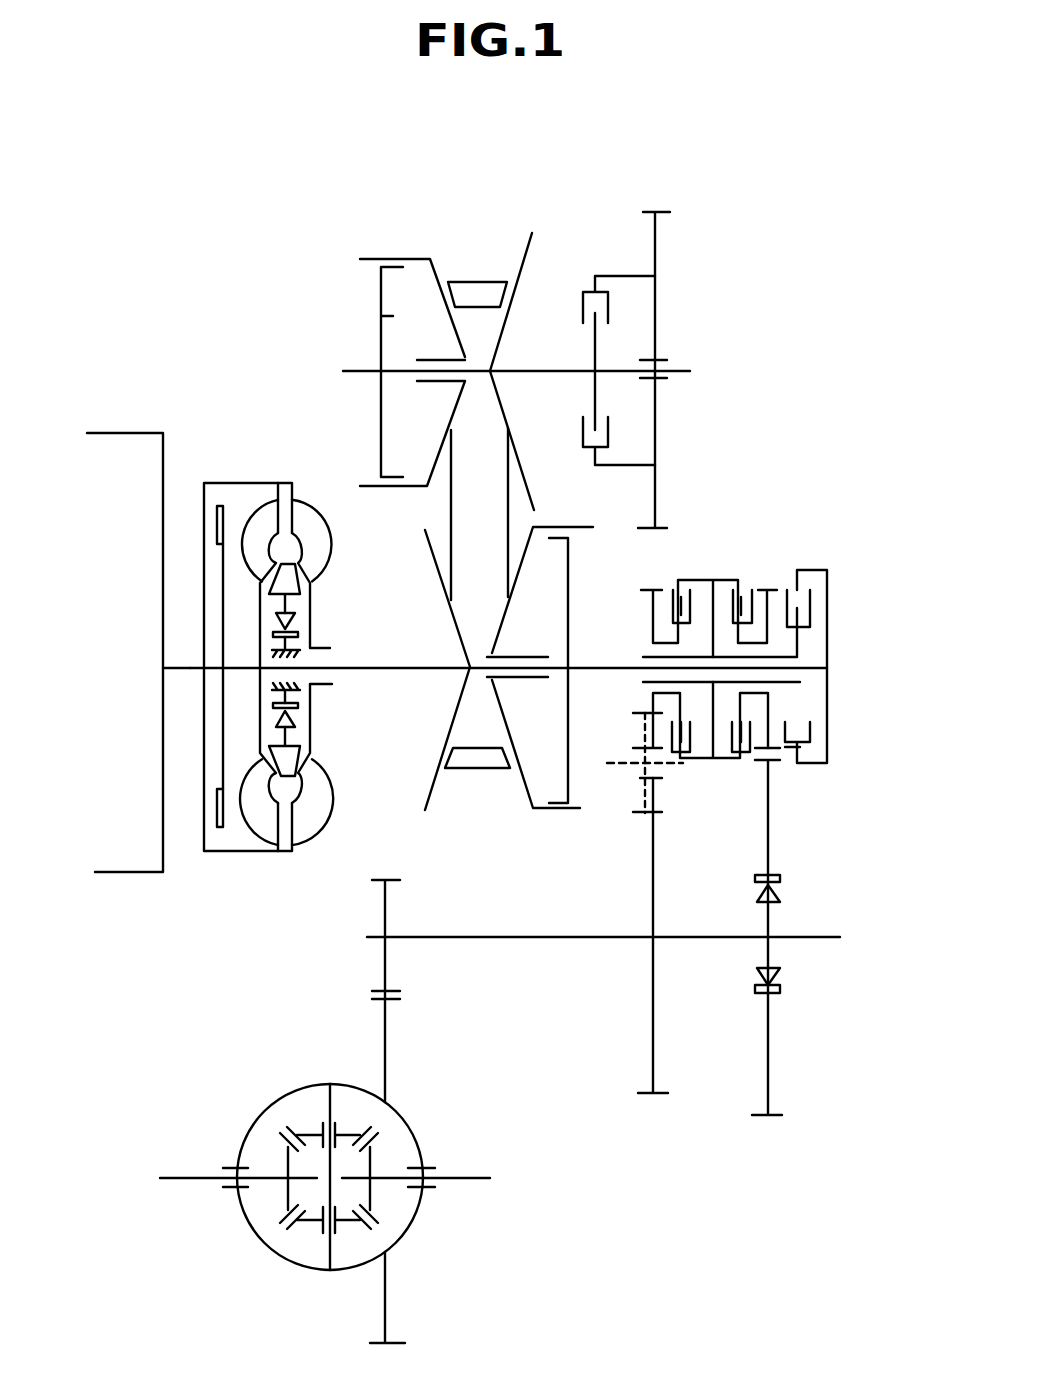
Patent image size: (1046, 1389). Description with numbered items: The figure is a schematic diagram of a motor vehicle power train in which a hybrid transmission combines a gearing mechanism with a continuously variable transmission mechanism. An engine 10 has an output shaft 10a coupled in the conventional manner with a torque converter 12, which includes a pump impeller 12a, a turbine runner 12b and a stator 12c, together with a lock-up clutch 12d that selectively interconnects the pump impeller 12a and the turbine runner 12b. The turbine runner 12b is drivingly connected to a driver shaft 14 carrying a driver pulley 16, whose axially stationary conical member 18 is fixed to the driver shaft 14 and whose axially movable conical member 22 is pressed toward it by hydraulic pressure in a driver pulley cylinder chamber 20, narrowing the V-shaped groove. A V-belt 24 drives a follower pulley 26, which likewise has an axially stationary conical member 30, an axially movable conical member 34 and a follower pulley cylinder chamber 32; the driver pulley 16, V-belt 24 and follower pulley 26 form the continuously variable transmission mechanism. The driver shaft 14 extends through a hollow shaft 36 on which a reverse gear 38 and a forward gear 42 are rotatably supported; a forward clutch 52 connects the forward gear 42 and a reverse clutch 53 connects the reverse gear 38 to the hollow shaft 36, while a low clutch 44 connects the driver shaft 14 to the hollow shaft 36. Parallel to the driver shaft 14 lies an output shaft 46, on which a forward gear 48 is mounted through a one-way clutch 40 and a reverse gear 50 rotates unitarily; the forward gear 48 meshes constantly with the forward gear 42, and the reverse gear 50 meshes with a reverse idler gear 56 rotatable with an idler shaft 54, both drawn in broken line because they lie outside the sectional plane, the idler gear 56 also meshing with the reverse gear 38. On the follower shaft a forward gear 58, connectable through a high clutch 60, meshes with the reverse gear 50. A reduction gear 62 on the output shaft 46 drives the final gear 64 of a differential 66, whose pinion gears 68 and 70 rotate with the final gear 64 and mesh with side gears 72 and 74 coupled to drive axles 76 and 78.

The engine 10 is at (136, 455).
The output shaft 10a is at (181, 670).
The torque converter 12 is at (294, 470).
The pump impeller 12a is at (312, 533).
The turbine runner 12b is at (264, 527).
The stator 12c is at (292, 583).
The lock-up clutch 12d is at (214, 523).
The driver shaft 14 is at (420, 666).
The driver pulley 16 is at (477, 782).
The axially stationary conical member 18 is at (435, 780).
The driver pulley cylinder chamber 20 is at (560, 740).
The axially movable conical member 22 is at (523, 790).
The V-belt 24 is at (510, 522).
The follower pulley 26 is at (497, 256).
The axially stationary conical member 30 is at (520, 256).
The follower pulley cylinder chamber 32 is at (385, 316).
The axially movable conical member 34 is at (440, 258).
The hollow shaft 36 is at (643, 656).
The reverse gear 38 is at (650, 590).
The one-way clutch 40 is at (778, 975).
The forward gear 42 is at (773, 590).
The low clutch 44 is at (826, 577).
The output shaft 46 is at (553, 935).
The forward gear 48 is at (769, 1120).
The reverse gear 50 is at (653, 1098).
The forward clutch 52 is at (752, 580).
The reverse clutch 53 is at (670, 584).
The idler shaft 54 is at (687, 765).
The reverse idler gear 56 is at (636, 812).
The forward gear 58 is at (668, 210).
The high clutch 60 is at (588, 288).
The reduction gear 62 is at (385, 878).
The final gear 64 is at (392, 1003).
The differential 66 is at (318, 1080).
The pinion gear 68 is at (350, 1130).
The pinion gear 70 is at (350, 1227).
The side gear 72 is at (288, 1192).
The side gear 74 is at (370, 1193).
The drive axle 76 is at (202, 1177).
The drive axle 78 is at (478, 1175).